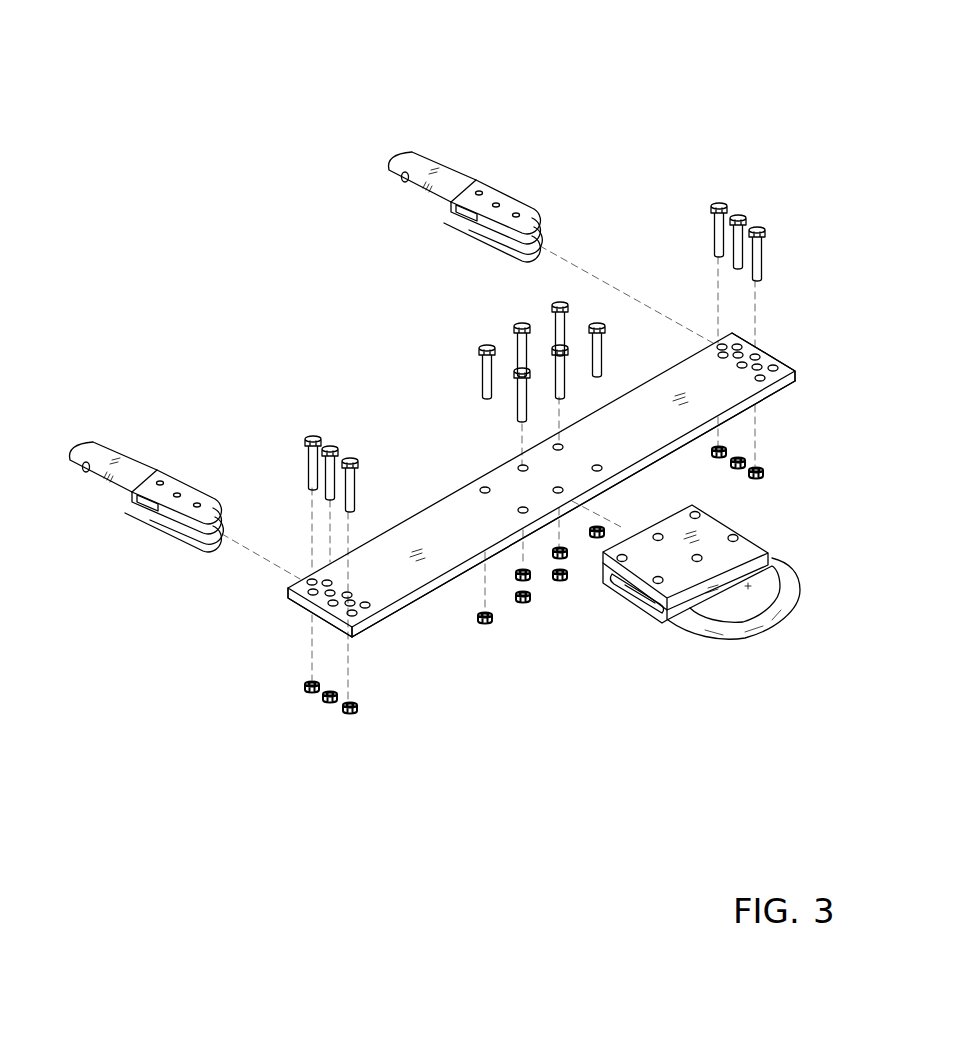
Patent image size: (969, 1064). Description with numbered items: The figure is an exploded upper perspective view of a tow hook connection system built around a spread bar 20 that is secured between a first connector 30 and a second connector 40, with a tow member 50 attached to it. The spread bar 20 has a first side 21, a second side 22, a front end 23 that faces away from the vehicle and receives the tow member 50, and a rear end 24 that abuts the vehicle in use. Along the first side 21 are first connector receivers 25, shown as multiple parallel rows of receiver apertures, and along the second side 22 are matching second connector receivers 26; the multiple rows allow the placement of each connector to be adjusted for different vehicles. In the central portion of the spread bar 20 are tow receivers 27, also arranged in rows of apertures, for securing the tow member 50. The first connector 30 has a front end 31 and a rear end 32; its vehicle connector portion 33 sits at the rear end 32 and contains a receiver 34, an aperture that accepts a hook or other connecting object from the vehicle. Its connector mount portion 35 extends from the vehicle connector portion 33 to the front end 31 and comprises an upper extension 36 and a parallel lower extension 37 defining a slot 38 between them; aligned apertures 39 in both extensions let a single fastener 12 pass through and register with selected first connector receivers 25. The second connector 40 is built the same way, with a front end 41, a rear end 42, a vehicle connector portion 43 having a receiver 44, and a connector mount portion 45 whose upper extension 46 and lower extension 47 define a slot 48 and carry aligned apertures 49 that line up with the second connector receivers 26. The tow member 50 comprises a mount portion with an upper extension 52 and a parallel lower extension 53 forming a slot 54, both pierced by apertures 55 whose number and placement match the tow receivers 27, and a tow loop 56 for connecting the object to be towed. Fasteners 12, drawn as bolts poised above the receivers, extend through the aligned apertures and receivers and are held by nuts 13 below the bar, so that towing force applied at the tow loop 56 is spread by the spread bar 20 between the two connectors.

The fasteners 12 is at (349, 459).
The nuts 13 is at (330, 702).
The spread bar 20 is at (546, 514).
The first side 21 is at (303, 603).
The second side 22 is at (750, 347).
The front end 23 is at (405, 600).
The rear end 24 is at (478, 490).
The first connector receivers 25 is at (377, 653).
The second connector receivers 26 is at (748, 366).
The tow receivers 27 is at (556, 448).
The first connector 30 is at (167, 465).
The front end 31 is at (217, 531).
The rear end 32 is at (82, 447).
The vehicle connector portion 33 is at (142, 470).
The receiver 34 is at (86, 470).
The connector mount portion 35 is at (204, 508).
The upper extension 36 is at (172, 485).
The lower extension 37 is at (203, 545).
The slot 38 is at (220, 530).
The apertures 39 is at (172, 508).
The second connector 40 is at (483, 171).
The front end 41 is at (533, 232).
The rear end 42 is at (402, 162).
The vehicle connector portion 43 is at (448, 183).
The receiver 44 is at (404, 183).
The connector mount portion 45 is at (522, 219).
The upper extension 46 is at (497, 205).
The lower extension 47 is at (512, 253).
The slot 48 is at (522, 247).
The apertures 49 is at (470, 222).
The tow member 50 is at (703, 599).
The upper extension 52 is at (670, 527).
The lower extension 53 is at (640, 612).
The slot 54 is at (638, 593).
The apertures 55 is at (745, 560).
The tow loop 56 is at (737, 642).